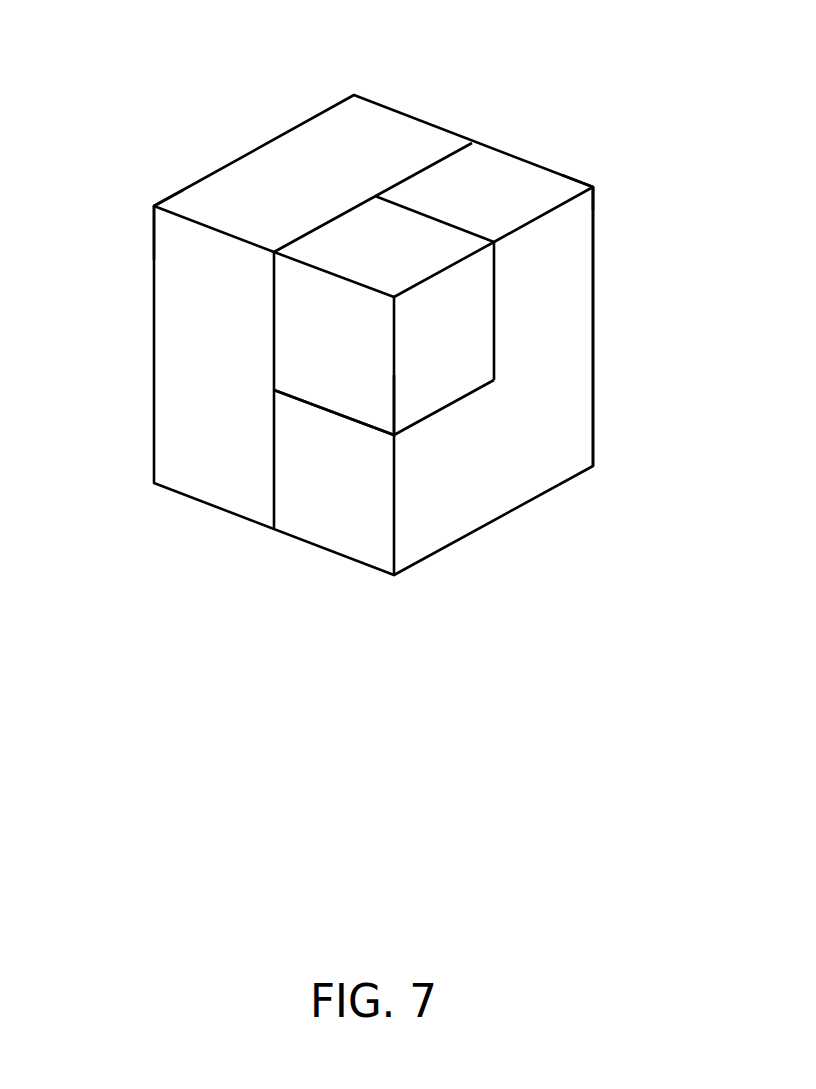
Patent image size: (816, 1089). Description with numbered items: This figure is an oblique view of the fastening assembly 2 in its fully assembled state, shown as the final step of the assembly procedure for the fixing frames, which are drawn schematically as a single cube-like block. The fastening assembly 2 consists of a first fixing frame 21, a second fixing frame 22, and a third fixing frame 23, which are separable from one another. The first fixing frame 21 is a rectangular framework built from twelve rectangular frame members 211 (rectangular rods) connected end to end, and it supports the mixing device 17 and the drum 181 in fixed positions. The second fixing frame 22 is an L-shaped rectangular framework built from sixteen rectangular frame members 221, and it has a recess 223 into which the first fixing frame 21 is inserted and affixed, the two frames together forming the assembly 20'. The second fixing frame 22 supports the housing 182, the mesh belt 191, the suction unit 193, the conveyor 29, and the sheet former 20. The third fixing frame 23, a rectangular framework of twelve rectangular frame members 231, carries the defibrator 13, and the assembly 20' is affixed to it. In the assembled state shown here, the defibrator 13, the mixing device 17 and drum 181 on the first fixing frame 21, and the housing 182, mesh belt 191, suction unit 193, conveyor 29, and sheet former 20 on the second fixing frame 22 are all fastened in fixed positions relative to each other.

The fastening assembly 2 is at (531, 72).
The defibrator 13 is at (303, 183).
The mixing device 17 is at (363, 242).
The drum 181 is at (383, 227).
The housing 182 is at (557, 423).
The mesh belt 191 is at (547, 452).
The suction unit 193 is at (513, 465).
The sheet former 20 is at (464, 546).
The assembly 20' is at (484, 175).
The first fixing frame 21 is at (323, 343).
The rectangular frame members 211 is at (393, 375).
The second fixing frame 22 is at (593, 323).
The rectangular frame members 221 is at (563, 175).
The recess 223 is at (421, 214).
The third fixing frame 23 is at (265, 144).
The rectangular frame members 231 is at (183, 188).
The conveyor 29 is at (475, 492).